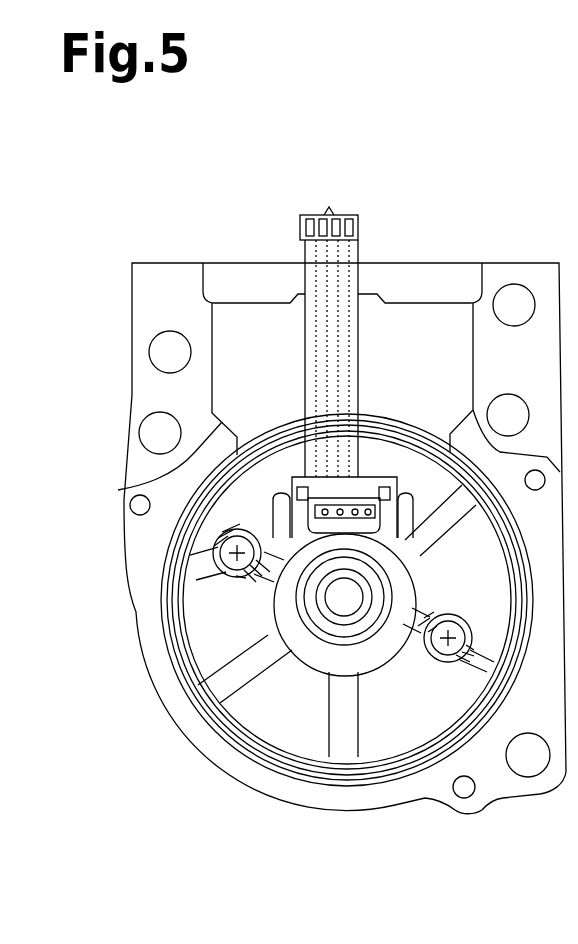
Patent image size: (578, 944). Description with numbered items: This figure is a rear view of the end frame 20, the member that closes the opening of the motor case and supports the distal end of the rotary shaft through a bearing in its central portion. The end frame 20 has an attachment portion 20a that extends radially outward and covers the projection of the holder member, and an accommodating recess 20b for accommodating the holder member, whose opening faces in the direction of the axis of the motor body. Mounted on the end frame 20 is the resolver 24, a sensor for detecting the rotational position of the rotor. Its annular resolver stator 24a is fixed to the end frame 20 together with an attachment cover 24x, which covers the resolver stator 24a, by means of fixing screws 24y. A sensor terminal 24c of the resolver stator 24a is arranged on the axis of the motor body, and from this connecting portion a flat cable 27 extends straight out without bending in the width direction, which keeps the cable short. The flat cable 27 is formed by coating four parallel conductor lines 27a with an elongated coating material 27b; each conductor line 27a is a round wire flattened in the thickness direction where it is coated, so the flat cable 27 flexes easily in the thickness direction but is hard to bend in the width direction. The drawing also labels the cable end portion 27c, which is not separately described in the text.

The end frame 20 is at (449, 262).
The attachment portion 20a is at (133, 303).
The accommodating recess 20b is at (342, 359).
The resolver 24 is at (347, 600).
The resolver stator 24a is at (404, 662).
The sensor terminal 24c is at (362, 470).
The attachment cover 24x is at (260, 622).
The fixing screws 24y is at (242, 535).
The flat cable 27 is at (355, 214).
The conductor lines 27a is at (330, 208).
The coating material 27b is at (306, 355).
The connector terminals 27c is at (300, 228).